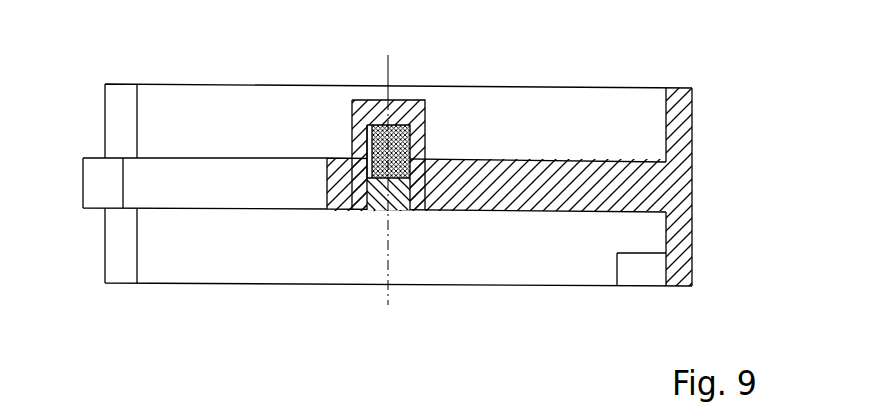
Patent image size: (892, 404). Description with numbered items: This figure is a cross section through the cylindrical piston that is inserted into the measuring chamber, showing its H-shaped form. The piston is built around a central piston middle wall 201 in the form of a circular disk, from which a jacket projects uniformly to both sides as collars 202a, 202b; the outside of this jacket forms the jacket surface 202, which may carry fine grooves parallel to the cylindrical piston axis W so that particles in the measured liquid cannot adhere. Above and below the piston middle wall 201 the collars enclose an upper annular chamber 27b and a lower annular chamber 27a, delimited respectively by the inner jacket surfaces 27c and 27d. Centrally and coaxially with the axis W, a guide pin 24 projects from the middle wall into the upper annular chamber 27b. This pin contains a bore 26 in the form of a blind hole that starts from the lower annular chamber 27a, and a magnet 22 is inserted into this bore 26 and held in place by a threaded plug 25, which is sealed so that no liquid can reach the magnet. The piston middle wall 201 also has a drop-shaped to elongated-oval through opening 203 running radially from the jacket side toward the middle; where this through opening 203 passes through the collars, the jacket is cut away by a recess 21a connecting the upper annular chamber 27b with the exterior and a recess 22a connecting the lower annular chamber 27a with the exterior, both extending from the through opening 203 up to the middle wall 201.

The recess 21a is at (122, 115).
The magnet 22 is at (365, 102).
The recess 22a is at (125, 272).
The guide pin 24 is at (413, 103).
The threaded plug 25 is at (375, 212).
The bore 26 is at (410, 212).
The lower annular chamber 27a is at (557, 278).
The upper annular chamber 27b is at (250, 115).
The inner jacket surface 27c is at (664, 140).
The inner jacket surface 27d is at (617, 286).
The piston middle wall 201 is at (513, 175).
The jacket surface 202 is at (692, 182).
The collar 202a is at (675, 120).
The collar 202b is at (668, 286).
The through opening 203 is at (202, 193).
The cylindrical piston axis W is at (388, 305).